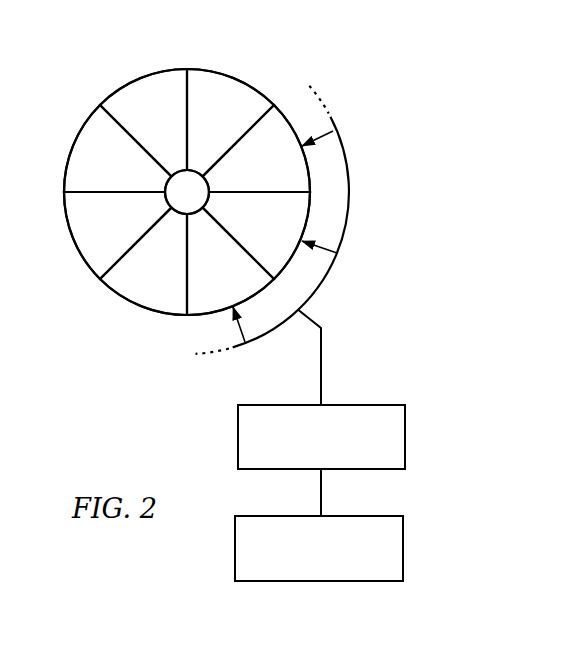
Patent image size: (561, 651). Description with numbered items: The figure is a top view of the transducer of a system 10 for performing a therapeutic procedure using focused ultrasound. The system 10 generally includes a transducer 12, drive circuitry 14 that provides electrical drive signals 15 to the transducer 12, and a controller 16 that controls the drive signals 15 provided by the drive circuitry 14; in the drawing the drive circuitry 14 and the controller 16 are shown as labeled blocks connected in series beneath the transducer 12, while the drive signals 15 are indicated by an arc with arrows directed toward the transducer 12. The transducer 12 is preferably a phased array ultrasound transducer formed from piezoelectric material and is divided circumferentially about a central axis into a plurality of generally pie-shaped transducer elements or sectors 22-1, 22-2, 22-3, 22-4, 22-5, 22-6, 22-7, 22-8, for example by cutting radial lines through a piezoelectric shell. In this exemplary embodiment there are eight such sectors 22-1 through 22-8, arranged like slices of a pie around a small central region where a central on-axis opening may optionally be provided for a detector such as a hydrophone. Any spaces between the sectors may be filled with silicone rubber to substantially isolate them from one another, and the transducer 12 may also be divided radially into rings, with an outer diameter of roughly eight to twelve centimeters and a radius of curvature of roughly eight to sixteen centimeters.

The system 10 is at (380, 209).
The transducer 12 is at (124, 86).
The drive circuitry 14 is at (407, 435).
The drive signals 15 is at (331, 114).
The controller 16 is at (407, 541).
The sector 22-1 is at (143, 122).
The sector 22-2 is at (117, 148).
The sector 22-3 is at (117, 235).
The sector 22-4 is at (143, 261).
The sector 22-5 is at (230, 261).
The sector 22-6 is at (256, 235).
The sector 22-7 is at (256, 148).
The sector 22-8 is at (230, 122).